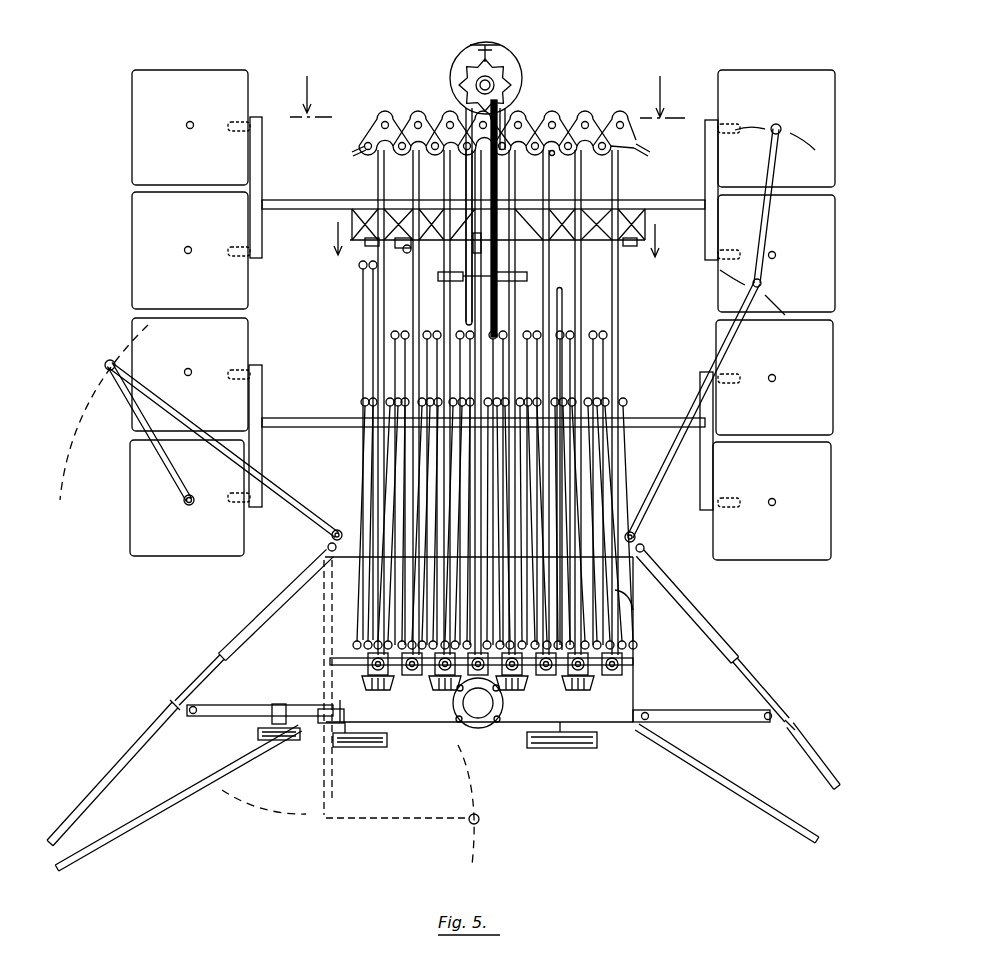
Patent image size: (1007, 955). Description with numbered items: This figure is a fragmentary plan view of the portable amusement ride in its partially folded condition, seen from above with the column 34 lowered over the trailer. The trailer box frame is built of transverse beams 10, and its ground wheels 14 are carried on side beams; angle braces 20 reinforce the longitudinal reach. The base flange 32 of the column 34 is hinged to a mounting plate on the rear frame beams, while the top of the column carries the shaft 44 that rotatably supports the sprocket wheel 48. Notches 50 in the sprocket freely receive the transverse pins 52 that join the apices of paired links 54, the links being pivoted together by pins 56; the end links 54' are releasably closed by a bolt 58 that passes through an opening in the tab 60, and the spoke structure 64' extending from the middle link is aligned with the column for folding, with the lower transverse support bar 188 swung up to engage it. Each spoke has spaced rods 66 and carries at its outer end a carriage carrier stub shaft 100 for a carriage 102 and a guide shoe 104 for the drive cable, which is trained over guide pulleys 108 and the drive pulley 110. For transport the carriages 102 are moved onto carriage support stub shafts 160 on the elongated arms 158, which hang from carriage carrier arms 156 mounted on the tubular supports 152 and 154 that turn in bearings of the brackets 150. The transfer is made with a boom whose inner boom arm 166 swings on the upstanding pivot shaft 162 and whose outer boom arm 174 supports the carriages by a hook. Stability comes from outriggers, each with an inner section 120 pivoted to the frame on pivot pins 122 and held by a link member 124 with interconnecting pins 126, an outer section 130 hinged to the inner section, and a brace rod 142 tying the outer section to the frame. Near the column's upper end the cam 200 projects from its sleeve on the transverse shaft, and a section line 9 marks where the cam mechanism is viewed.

The transverse beams 10 is at (633, 536).
The angle braces 20 is at (350, 512).
The base flange 32 is at (487, 728).
The column 34 is at (510, 108).
The shaft 44 is at (480, 84).
The sprocket wheel 48 is at (494, 67).
The notches 50 is at (514, 62).
The transverse pins 52 is at (525, 117).
The links 54 is at (496, 120).
The end links 54' is at (495, 116).
The pins 56 is at (553, 155).
The bolt 58 is at (367, 148).
The tab 60 is at (640, 151).
The spoke structure 64' is at (442, 116).
The rods 66 is at (582, 318).
The carriage carrier stub shaft 100 is at (414, 670).
The carriage 102 is at (132, 230).
The guide shoe 104 is at (582, 675).
The guide pulleys 108 is at (286, 741).
The drive pulley 110 is at (590, 748).
The inner section 120 is at (255, 622).
The pivot pins 122 is at (645, 549).
The link member 124 is at (250, 706).
The interconnecting pins 126 is at (643, 712).
The outer section 130 is at (93, 795).
The brace rod 142 is at (122, 833).
The brackets 150 is at (460, 205).
The tubular support 152 is at (503, 318).
The tubular support 154 is at (466, 312).
The carriage carrier arms 156 is at (320, 204).
The arm 158 is at (262, 153).
The carriage support stub shaft 160 is at (727, 502).
The pivot shaft 162 is at (330, 535).
The inner boom arm 166 is at (282, 495).
The outer boom arm 174 is at (168, 468).
The lower transverse support bar 188 is at (618, 591).
The arcuate cam 200 is at (398, 246).
The ground wheels 14 is at (487, 86).
The section line 9 is at (494, 239).